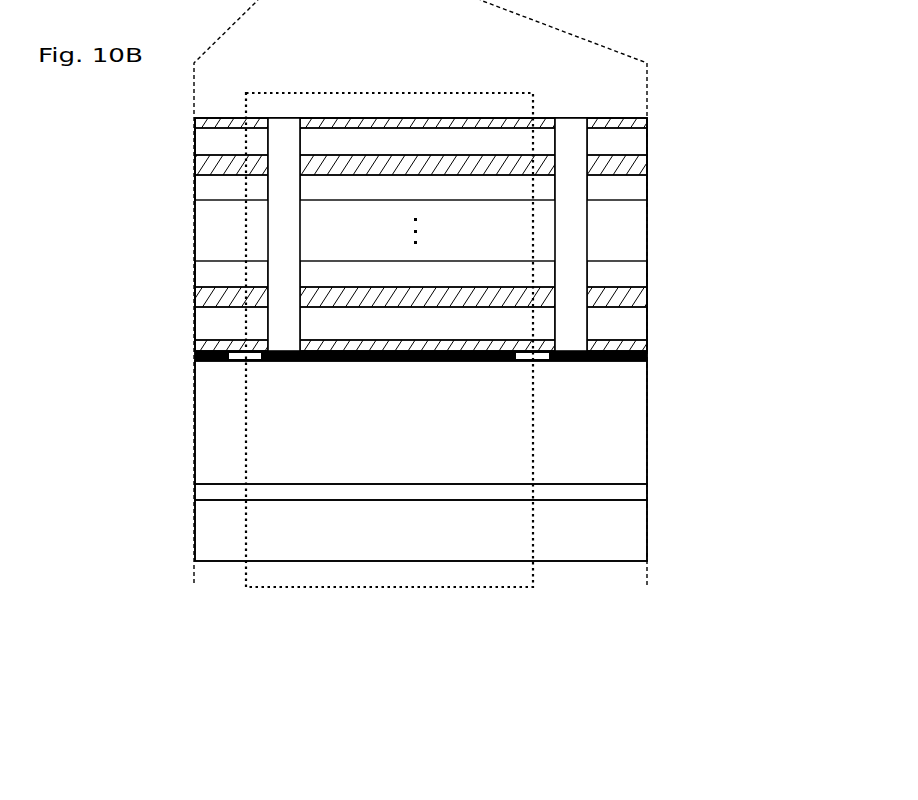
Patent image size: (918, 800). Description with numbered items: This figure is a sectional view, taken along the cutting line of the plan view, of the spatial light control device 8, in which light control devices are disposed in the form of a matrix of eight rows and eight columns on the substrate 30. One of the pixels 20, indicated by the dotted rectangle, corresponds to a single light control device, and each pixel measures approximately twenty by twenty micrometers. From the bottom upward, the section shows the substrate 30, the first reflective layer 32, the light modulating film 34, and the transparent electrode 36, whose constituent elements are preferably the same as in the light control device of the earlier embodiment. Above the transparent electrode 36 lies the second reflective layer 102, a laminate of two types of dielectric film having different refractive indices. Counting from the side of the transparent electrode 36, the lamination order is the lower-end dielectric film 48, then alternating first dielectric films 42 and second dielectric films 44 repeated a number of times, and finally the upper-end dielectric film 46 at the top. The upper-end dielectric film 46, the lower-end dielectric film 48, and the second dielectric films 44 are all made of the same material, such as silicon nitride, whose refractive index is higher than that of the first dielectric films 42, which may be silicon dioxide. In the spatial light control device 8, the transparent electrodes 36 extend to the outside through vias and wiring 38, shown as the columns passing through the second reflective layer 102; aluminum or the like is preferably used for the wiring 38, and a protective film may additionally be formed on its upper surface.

The spatial light control device 8 is at (421, 652).
The pixel 20 is at (391, 93).
The substrate 30 is at (645, 533).
The first reflective layer 32 is at (645, 490).
The light modulating film 34 is at (657, 422).
The transparent electrode 36 is at (647, 357).
The wiring 38 is at (568, 128).
The first dielectric film 42 is at (647, 143).
The second dielectric film 44 is at (647, 163).
The upper-end dielectric film 46 is at (643, 124).
The lower-end dielectric film 48 is at (645, 347).
The second reflective layer 102 is at (703, 115).